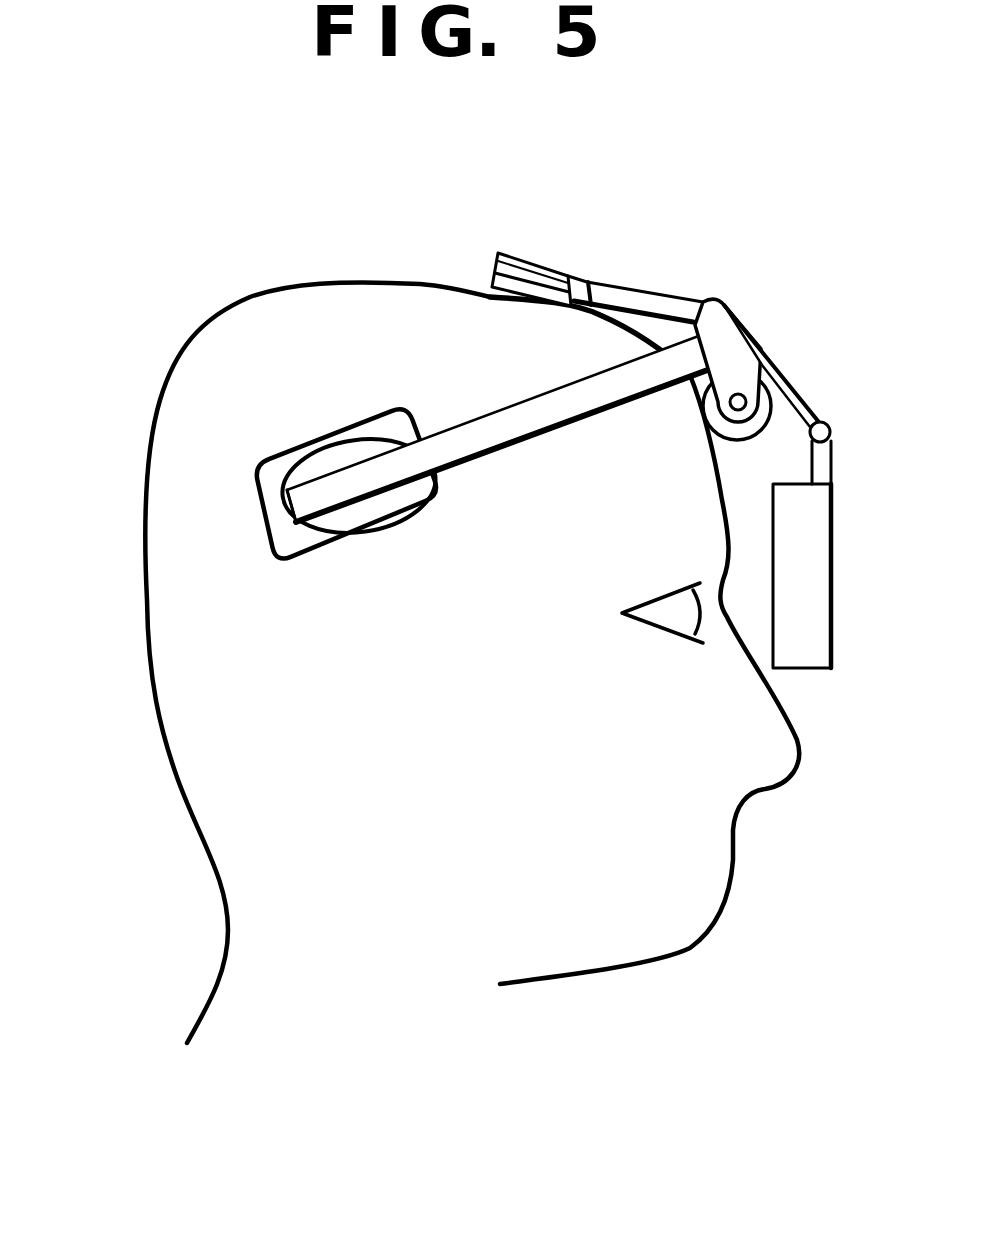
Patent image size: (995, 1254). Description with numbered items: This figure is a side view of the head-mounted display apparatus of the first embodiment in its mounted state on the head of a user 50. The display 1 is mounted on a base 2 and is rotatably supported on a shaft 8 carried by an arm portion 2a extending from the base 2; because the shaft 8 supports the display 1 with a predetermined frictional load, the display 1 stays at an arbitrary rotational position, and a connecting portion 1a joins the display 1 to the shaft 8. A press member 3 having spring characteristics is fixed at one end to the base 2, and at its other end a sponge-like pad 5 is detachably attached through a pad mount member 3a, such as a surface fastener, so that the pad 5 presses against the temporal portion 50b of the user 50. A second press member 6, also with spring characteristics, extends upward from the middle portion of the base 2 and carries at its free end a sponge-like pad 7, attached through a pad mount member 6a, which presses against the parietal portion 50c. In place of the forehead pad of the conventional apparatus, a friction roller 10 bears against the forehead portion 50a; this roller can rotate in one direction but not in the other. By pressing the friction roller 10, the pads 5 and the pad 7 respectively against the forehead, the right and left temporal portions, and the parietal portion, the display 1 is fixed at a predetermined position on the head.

The display 1 is at (803, 602).
The connecting member 1a is at (822, 463).
The base 2 is at (715, 342).
The arm portion 2a is at (775, 373).
The press member 3 is at (470, 443).
The pad mount member 3a is at (307, 470).
The pad 5 is at (331, 440).
The press member 6 is at (627, 288).
The pad mount member 6a is at (513, 272).
The pad 7 is at (500, 285).
The shaft 8 is at (830, 431).
The friction roller 10 is at (777, 428).
The user 50 is at (613, 913).
The forehead portion 50a is at (695, 422).
The temporal portion 50b is at (257, 528).
The parietal portion 50c is at (533, 316).